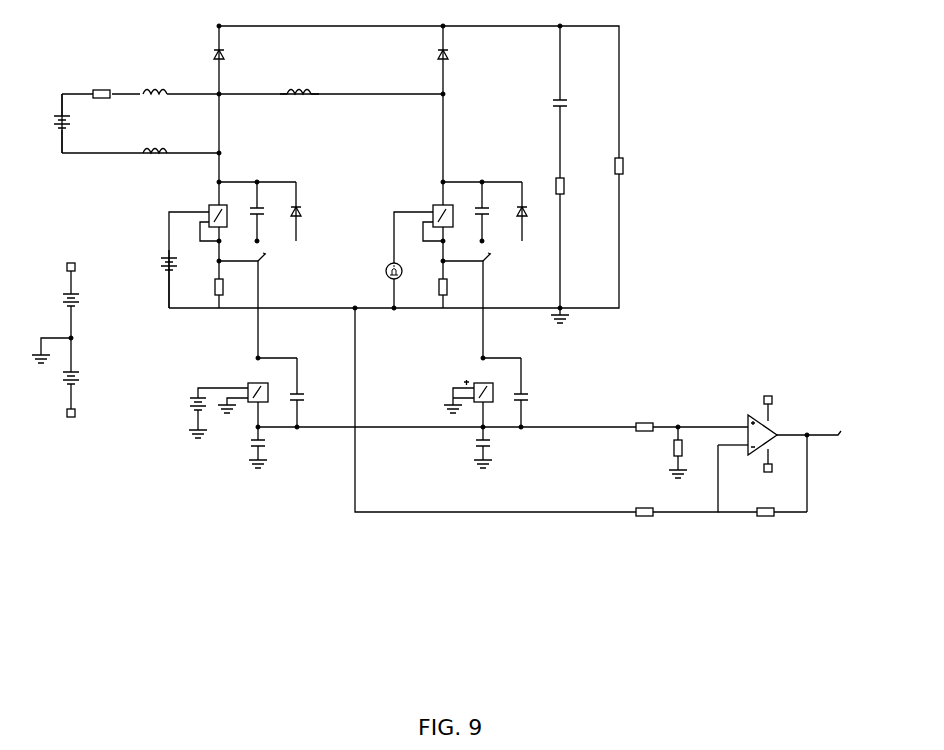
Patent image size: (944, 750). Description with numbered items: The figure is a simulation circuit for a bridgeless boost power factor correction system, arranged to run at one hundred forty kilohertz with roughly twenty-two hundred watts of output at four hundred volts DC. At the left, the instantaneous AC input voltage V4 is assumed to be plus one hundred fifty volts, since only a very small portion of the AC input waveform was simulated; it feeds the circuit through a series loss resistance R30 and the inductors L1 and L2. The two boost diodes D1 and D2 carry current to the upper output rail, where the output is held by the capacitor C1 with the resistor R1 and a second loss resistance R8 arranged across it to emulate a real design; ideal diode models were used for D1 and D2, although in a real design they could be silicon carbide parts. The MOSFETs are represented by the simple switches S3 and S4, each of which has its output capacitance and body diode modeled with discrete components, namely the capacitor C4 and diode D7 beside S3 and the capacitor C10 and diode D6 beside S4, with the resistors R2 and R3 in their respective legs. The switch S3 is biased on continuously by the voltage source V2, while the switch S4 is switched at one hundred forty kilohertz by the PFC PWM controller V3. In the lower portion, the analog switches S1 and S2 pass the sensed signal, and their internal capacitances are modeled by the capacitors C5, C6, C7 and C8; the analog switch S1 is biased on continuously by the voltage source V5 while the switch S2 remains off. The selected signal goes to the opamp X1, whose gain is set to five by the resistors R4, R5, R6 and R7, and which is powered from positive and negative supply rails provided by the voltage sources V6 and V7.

The boost diode D1 is at (234, 55).
The boost diode D2 is at (458, 55).
The loss resistance R30 is at (101, 83).
The inductor L1 is at (181, 78).
The inductor L2 is at (155, 139).
The instantaneous AC input voltage V4 is at (44, 123).
The capacitor C1 is at (543, 167).
The loss resistance R8 is at (574, 197).
The resistor R1 is at (634, 161).
The switch S3 is at (232, 244).
The capacitor C4 is at (265, 211).
The diode D7 is at (309, 211).
The voltage source V2 is at (155, 279).
The resistor R2 is at (204, 290).
The switch S4 is at (458, 221).
The capacitor C10 is at (495, 211).
The diode D6 is at (532, 214).
The PFC PWM controller V3 is at (378, 285).
The resistor R3 is at (428, 290).
The 12V supply +Vcc V6 is at (68, 305).
The 12V supply -Vcc V7 is at (79, 406).
The analog switch S1 is at (247, 392).
The voltage source V5 is at (183, 411).
The capacitor C5 is at (307, 393).
The capacitor C7 is at (269, 447).
The analog switch S2 is at (482, 392).
The capacitor C6 is at (534, 393).
The capacitor C8 is at (470, 447).
The resistor R4 is at (690, 414).
The resistor R5 is at (666, 452).
The opamp X1 is at (752, 431).
The resistor R7 is at (676, 493).
The resistor R6 is at (762, 525).